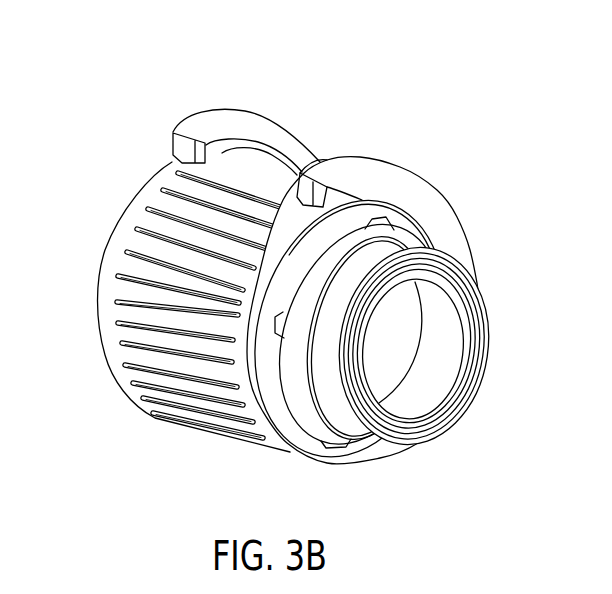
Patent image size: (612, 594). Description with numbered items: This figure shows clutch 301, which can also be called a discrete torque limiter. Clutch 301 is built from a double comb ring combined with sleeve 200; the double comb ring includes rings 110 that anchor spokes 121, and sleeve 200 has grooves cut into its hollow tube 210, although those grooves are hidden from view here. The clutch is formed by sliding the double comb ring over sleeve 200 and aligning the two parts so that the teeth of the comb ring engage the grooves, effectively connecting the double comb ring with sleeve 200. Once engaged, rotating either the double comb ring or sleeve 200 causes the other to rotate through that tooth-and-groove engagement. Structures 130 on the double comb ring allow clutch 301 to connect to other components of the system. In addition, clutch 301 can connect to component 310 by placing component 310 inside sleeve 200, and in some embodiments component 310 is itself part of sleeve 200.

The clutch 301 is at (470, 94).
The rings 110 is at (160, 178).
The spokes 121 is at (152, 248).
The sleeve 200 is at (137, 284).
The structures 130 is at (357, 157).
The hollow tube 210 is at (444, 228).
The component 310 is at (430, 361).